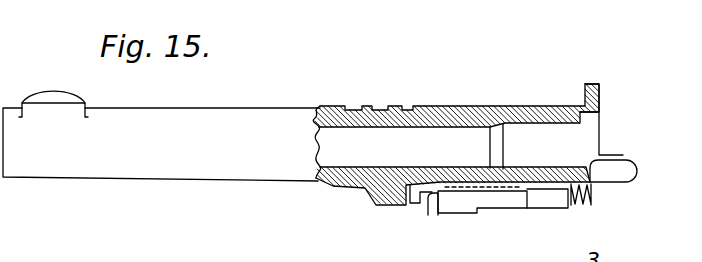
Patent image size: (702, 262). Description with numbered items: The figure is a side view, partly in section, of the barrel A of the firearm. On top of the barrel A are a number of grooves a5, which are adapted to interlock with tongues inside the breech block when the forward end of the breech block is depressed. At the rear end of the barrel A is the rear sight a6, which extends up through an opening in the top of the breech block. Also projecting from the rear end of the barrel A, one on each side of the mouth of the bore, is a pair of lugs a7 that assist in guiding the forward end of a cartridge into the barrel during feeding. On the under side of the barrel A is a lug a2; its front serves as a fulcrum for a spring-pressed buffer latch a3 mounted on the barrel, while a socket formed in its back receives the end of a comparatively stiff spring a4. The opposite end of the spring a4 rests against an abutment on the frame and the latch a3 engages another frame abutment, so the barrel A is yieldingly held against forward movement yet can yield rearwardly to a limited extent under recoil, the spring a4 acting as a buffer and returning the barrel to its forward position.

The barrel A is at (161, 136).
The lug a2 is at (545, 208).
The spring-pressed buffer latch a3 is at (496, 213).
The spring a4 is at (592, 196).
The grooves a5 is at (406, 105).
The rear sight a6 is at (599, 86).
The lugs a7 is at (619, 160).